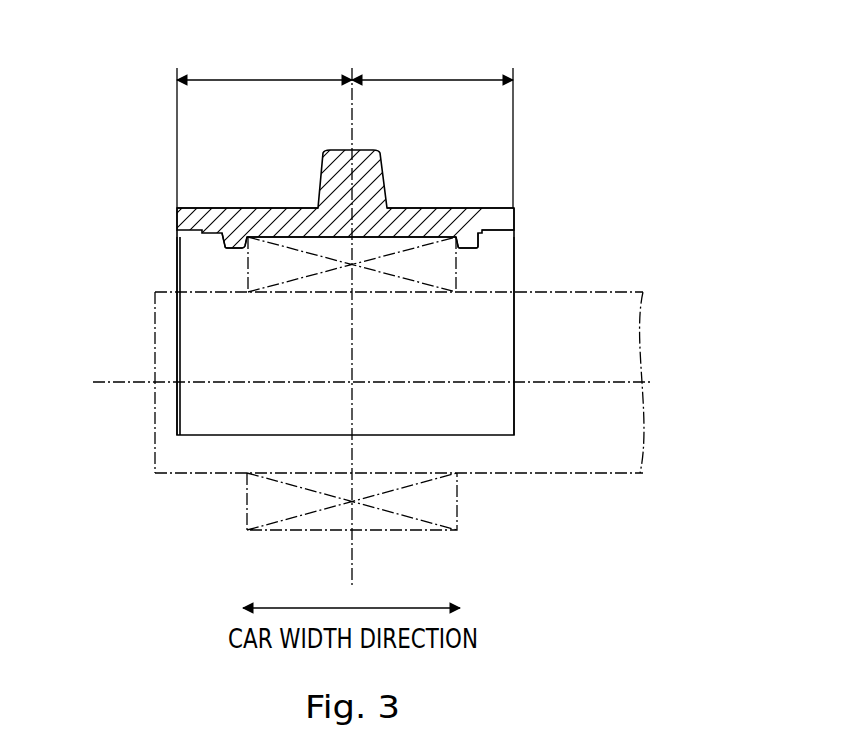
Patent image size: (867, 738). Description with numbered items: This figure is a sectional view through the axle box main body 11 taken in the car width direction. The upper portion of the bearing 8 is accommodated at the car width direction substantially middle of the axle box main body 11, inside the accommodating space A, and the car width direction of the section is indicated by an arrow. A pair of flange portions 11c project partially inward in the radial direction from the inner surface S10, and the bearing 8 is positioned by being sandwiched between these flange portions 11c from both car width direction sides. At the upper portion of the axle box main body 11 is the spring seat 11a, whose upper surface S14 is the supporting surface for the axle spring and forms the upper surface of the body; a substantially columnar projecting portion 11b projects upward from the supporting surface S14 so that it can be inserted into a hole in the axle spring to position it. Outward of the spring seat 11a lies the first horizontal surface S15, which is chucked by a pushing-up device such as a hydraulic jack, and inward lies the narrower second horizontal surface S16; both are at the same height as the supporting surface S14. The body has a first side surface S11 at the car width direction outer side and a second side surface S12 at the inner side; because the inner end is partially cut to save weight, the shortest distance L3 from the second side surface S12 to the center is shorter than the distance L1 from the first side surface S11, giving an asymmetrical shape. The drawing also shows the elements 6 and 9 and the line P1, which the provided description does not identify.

The axle box main body 11 is at (221, 203).
The spring seat 11a is at (290, 207).
The projecting portion 11b is at (388, 207).
The flange portion 11c is at (222, 247).
The bearing 8 is at (456, 272).
The axle 6 is at (622, 477).
The rotation axis 9 is at (353, 72).
The reference plane P1 is at (130, 382).
The inner surface S10 is at (412, 237).
The first side surface S11 is at (176, 413).
The second side surface S12 is at (514, 415).
The upper surface (supporting surface) S14 is at (483, 207).
The first horizontal surface S15 is at (177, 204).
The second horizontal surface S16 is at (514, 208).
The accommodating space A is at (236, 273).
The shortest distance between first side surface and center L1 is at (264, 131).
The shortest distance between second side surface and center L3 is at (432, 131).